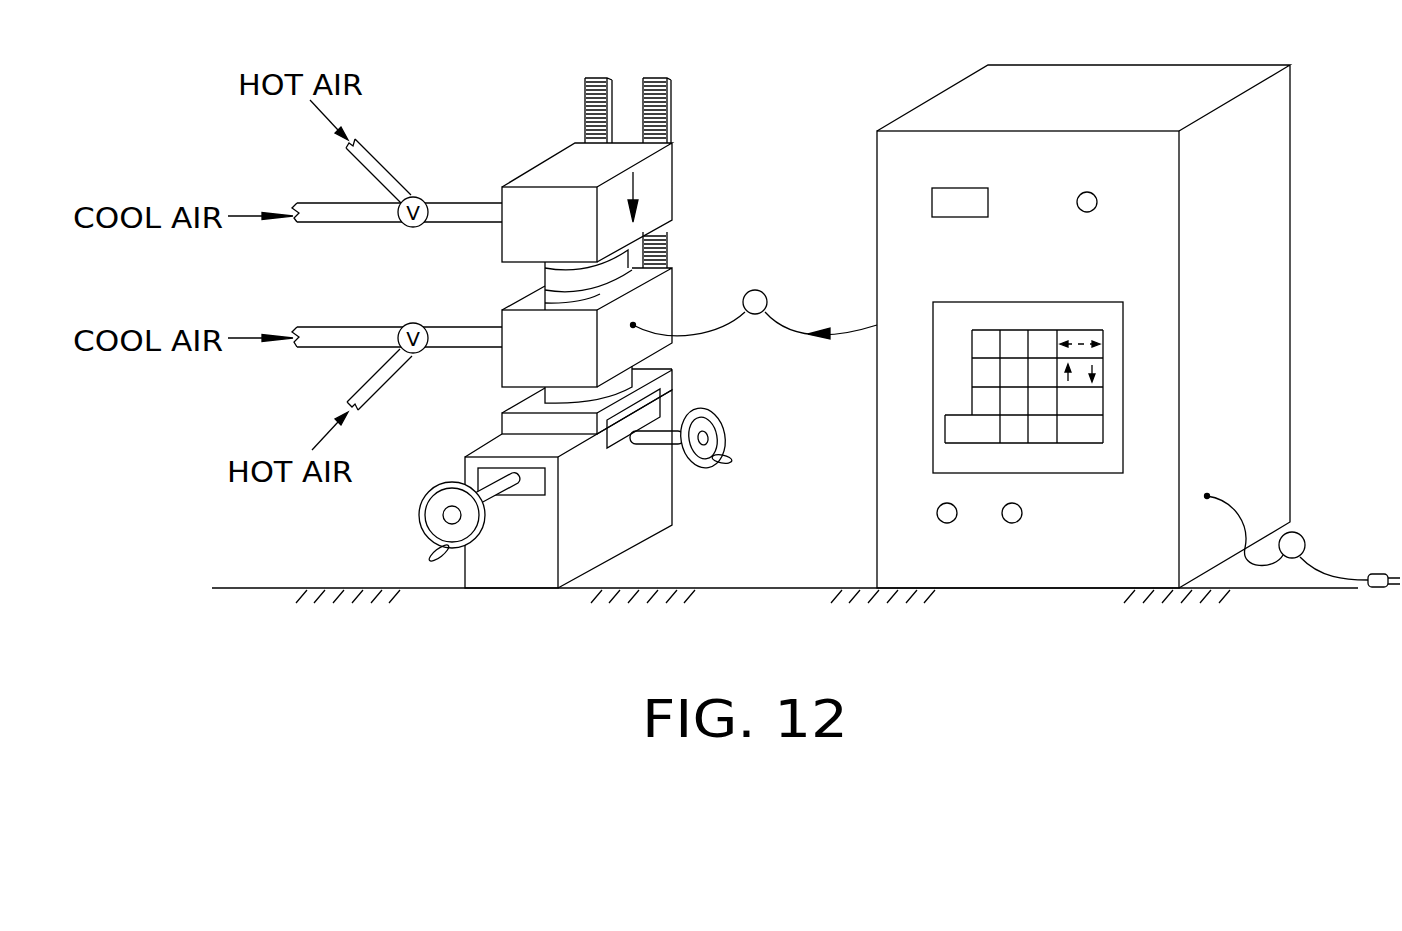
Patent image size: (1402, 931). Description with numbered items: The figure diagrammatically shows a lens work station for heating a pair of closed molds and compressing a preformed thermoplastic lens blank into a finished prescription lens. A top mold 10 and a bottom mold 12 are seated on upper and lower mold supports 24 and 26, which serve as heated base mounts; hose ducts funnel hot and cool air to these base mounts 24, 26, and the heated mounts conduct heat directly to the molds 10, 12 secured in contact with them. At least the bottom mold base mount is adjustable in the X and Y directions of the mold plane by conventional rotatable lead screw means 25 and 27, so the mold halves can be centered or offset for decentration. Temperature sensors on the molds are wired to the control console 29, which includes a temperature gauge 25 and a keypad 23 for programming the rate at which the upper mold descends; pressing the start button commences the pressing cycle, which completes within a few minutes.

The top mold 10 is at (550, 272).
The bottom mold 12 is at (550, 292).
The keypad control panel 23 is at (1052, 330).
The upper mold support 24 is at (510, 376).
The temperature gauge 25 is at (950, 188).
The lower mold support 26 is at (500, 197).
The lead screw means 27 is at (660, 443).
The control console 29 is at (1155, 457).